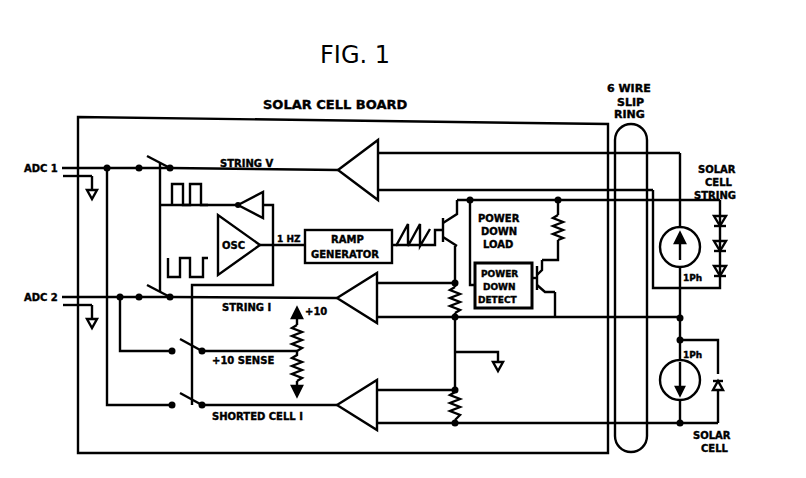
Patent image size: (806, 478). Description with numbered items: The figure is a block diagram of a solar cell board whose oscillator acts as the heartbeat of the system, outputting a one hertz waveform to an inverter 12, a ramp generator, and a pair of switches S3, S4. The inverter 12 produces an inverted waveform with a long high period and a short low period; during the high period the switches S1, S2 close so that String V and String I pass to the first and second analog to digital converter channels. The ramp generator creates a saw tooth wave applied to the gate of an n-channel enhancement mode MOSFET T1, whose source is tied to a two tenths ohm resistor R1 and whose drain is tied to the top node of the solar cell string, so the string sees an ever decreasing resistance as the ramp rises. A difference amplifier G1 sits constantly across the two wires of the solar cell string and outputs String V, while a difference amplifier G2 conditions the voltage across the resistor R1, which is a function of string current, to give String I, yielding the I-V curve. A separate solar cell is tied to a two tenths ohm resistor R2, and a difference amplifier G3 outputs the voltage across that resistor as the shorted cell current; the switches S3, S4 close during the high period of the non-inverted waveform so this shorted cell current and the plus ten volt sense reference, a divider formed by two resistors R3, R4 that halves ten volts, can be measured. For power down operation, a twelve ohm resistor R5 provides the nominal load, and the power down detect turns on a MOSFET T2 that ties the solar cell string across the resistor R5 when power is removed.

The inverter 12 is at (265, 196).
The switch S1 is at (150, 160).
The switch S2 is at (150, 290).
The switch S3 is at (183, 343).
The switch S4 is at (183, 398).
The difference amplifier G1 is at (358, 170).
The difference amplifier G2 is at (357, 298).
The difference amplifier G3 is at (357, 405).
The 0.2 ohm resistor R1 is at (432, 299).
The 0.2 ohm resistor R2 is at (432, 406).
The resistor R3 is at (306, 366).
The resistor R4 is at (306, 338).
The 12 ohm resistor R5 is at (578, 227).
The MOSFET T1 is at (445, 222).
The MOSFET T2 is at (545, 284).